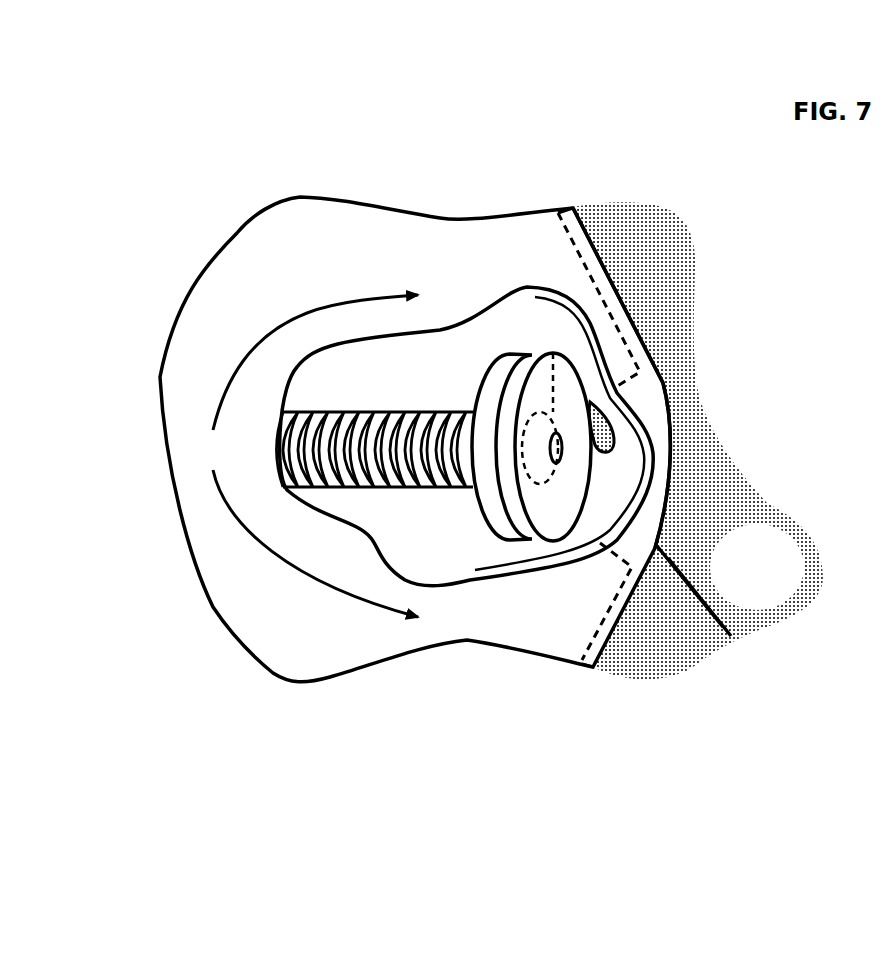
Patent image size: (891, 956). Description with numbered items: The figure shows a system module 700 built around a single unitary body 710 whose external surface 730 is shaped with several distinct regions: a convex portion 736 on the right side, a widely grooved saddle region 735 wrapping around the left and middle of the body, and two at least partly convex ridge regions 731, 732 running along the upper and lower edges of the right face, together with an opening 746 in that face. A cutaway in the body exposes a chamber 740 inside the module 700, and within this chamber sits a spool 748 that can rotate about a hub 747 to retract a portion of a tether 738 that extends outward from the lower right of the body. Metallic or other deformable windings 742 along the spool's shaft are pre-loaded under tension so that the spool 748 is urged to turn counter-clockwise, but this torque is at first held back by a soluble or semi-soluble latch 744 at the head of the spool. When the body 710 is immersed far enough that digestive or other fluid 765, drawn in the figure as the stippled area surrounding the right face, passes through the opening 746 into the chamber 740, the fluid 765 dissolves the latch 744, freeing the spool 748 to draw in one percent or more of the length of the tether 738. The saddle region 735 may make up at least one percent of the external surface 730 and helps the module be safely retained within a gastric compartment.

The system module 700 is at (401, 372).
The unitary body 710 is at (415, 439).
The external surface 730 is at (505, 236).
The ridge region 731 is at (590, 230).
The ridge region 732 is at (606, 650).
The saddle region 735 is at (305, 456).
The convex portion 736 is at (665, 378).
The tether 738 is at (730, 653).
The chamber 740 is at (467, 436).
The windings 742 is at (335, 420).
The latch 744 is at (550, 352).
The opening 746 is at (622, 446).
The hub 747 is at (560, 456).
The spool 748 is at (487, 486).
The fluid 765 is at (698, 440).